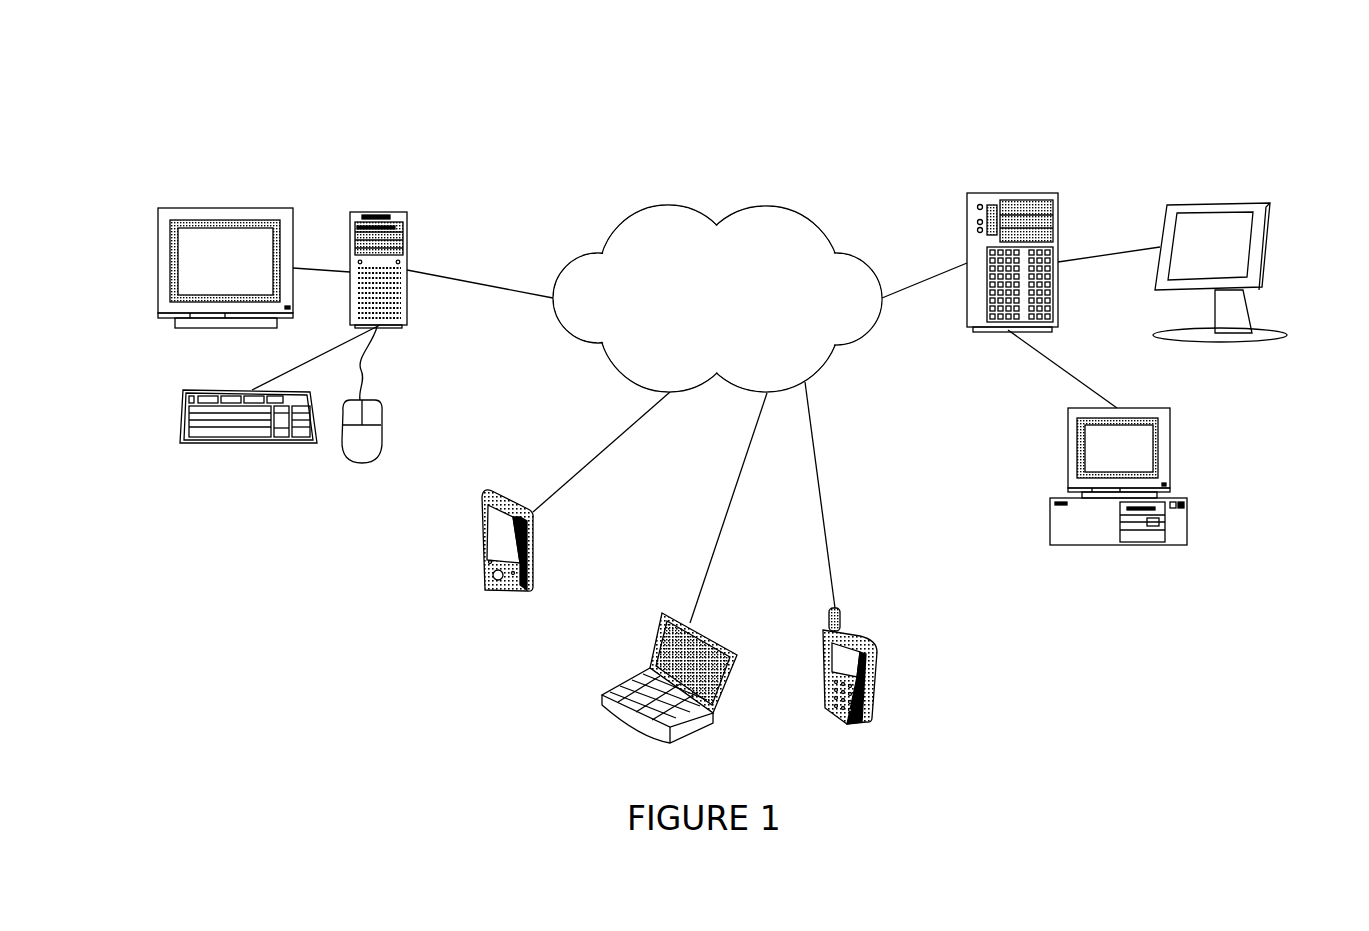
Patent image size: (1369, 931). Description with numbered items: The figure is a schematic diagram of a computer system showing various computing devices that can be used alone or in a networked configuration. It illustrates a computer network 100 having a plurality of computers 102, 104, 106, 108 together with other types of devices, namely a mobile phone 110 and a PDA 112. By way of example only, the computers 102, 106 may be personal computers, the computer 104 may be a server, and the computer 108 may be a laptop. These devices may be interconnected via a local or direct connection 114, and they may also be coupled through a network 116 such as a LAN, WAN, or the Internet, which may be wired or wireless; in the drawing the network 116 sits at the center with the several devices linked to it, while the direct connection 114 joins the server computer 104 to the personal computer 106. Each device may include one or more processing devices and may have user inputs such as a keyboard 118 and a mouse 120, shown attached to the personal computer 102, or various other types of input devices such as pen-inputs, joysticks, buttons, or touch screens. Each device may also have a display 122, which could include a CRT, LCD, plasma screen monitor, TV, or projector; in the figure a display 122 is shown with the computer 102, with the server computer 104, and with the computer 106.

The computer network 100 is at (710, 412).
The computer 102 is at (377, 212).
The computer 104 is at (1058, 198).
The computer 106 is at (1050, 508).
The computer 108 is at (602, 695).
The mobile phone 110 is at (878, 670).
The PDA 112 is at (482, 567).
The local or direct connection 114 is at (1058, 366).
The network 116 is at (765, 207).
The keyboard 118 is at (180, 412).
The mouse 120 is at (383, 420).
The display 122 is at (158, 262).